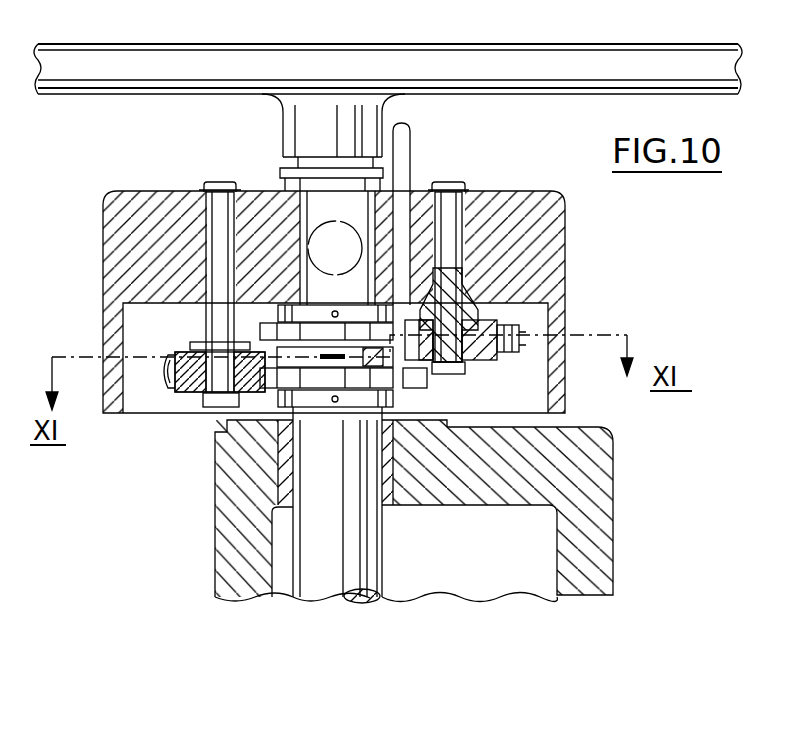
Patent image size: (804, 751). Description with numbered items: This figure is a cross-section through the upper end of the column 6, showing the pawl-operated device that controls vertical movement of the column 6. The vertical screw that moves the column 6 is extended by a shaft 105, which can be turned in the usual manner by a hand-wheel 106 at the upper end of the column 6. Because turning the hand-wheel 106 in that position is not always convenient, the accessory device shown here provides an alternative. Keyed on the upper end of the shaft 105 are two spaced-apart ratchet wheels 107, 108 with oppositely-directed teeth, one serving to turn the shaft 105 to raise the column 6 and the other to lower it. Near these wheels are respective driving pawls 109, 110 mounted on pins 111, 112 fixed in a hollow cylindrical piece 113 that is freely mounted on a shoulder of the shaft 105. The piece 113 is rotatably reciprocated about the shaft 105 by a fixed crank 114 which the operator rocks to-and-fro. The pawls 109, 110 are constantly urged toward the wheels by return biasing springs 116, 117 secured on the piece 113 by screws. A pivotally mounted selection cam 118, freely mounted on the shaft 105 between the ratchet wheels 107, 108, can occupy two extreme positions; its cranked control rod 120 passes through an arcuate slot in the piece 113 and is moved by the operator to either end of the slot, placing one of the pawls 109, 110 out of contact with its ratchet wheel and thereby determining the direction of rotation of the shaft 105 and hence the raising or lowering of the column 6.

The column 6 is at (597, 527).
The shaft 105 is at (353, 540).
The hand-wheel 106 is at (556, 52).
The ratchet wheel 107 is at (262, 332).
The ratchet wheel 108 is at (415, 378).
The driving pawl 109 is at (191, 376).
The driving pawl 110 is at (490, 328).
The pin 111 is at (213, 222).
The pin 112 is at (445, 227).
The hollow cylindrical piece 113 is at (127, 240).
The crank 114 is at (307, 247).
The return biasing spring 116 is at (160, 383).
The return biasing spring 117 is at (510, 343).
The selection cam 118 is at (303, 352).
The cranked control rod 120 is at (416, 162).